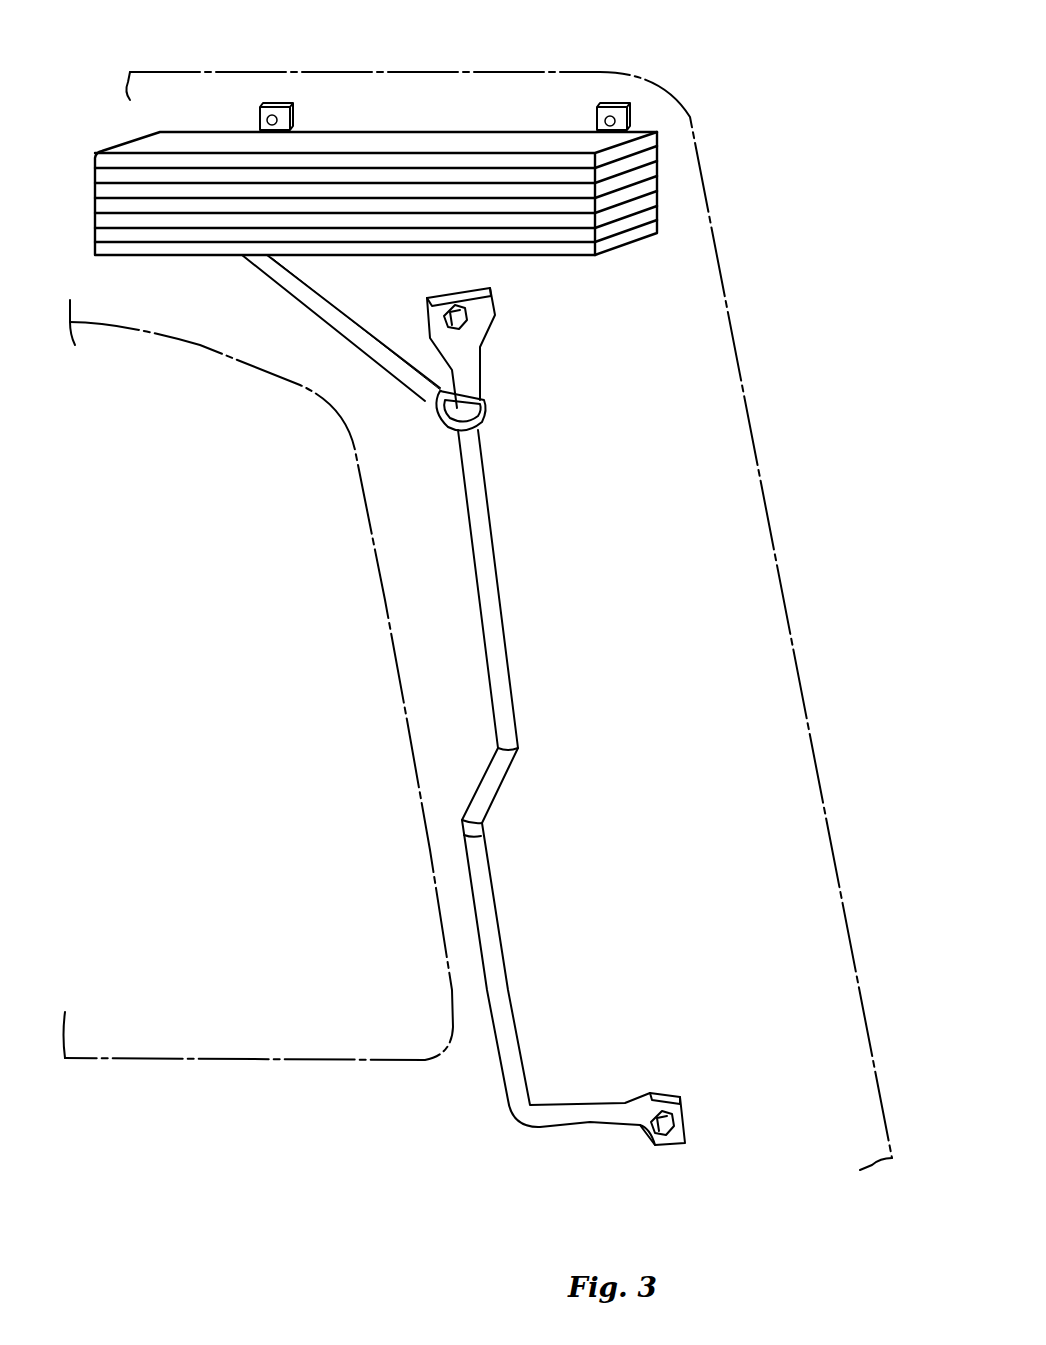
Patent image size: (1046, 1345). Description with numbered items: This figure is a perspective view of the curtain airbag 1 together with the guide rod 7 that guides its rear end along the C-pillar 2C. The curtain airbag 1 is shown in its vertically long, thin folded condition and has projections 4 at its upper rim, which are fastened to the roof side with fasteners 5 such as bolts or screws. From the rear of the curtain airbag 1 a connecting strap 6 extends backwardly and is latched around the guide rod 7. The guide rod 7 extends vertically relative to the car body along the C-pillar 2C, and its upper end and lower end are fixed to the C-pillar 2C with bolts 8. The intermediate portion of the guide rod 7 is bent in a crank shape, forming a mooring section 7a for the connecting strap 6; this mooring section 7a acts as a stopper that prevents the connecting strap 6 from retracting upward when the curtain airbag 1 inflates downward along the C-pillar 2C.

The curtain airbag 1 is at (472, 148).
The C-pillar 2C is at (428, 643).
The projections 4 is at (293, 122).
The fasteners 5 is at (272, 105).
The connecting strap 6 is at (320, 313).
The guide rod 7 is at (517, 702).
The mooring section 7a is at (490, 785).
The bolts 8 is at (462, 318).